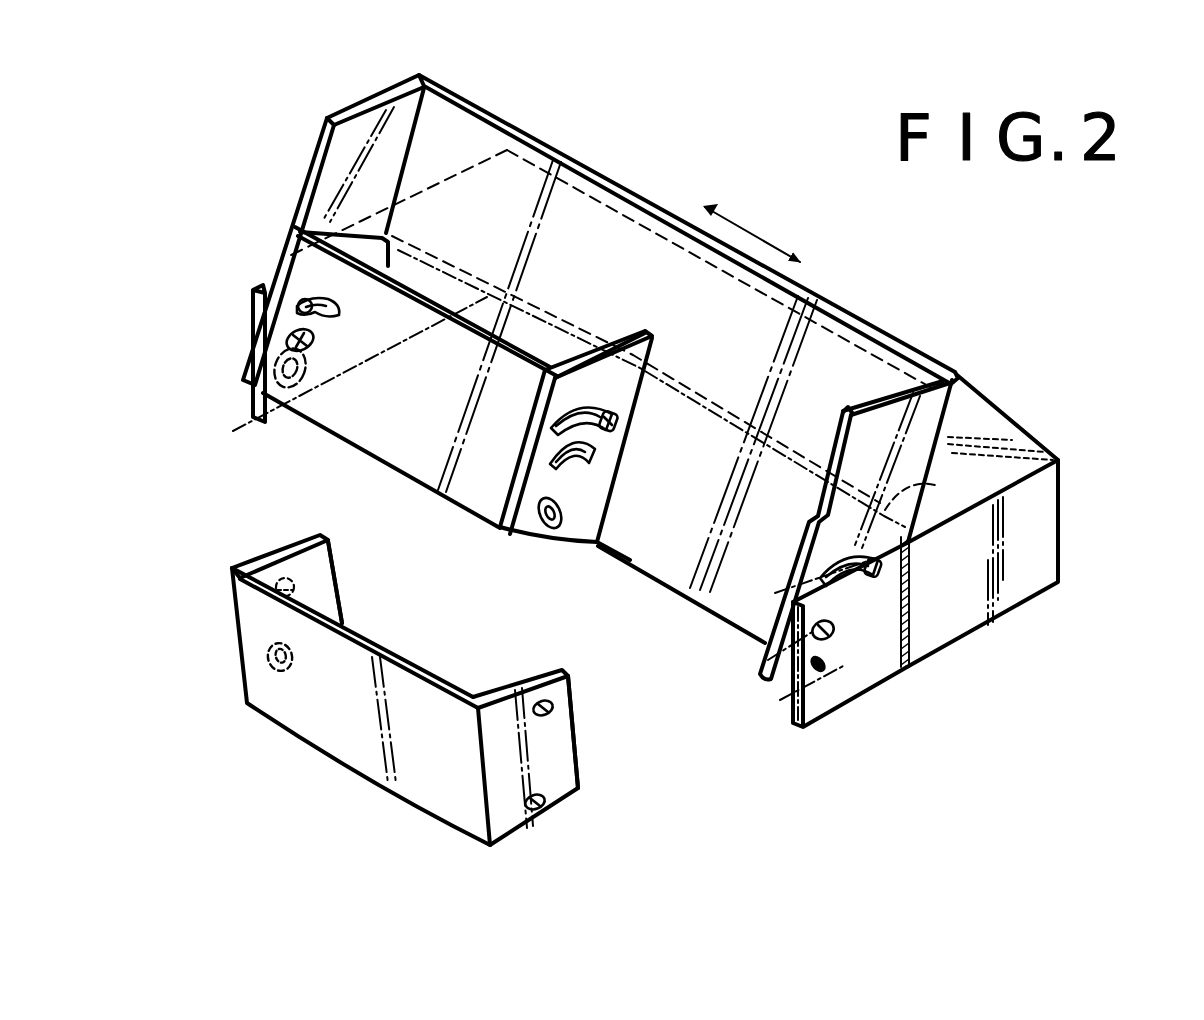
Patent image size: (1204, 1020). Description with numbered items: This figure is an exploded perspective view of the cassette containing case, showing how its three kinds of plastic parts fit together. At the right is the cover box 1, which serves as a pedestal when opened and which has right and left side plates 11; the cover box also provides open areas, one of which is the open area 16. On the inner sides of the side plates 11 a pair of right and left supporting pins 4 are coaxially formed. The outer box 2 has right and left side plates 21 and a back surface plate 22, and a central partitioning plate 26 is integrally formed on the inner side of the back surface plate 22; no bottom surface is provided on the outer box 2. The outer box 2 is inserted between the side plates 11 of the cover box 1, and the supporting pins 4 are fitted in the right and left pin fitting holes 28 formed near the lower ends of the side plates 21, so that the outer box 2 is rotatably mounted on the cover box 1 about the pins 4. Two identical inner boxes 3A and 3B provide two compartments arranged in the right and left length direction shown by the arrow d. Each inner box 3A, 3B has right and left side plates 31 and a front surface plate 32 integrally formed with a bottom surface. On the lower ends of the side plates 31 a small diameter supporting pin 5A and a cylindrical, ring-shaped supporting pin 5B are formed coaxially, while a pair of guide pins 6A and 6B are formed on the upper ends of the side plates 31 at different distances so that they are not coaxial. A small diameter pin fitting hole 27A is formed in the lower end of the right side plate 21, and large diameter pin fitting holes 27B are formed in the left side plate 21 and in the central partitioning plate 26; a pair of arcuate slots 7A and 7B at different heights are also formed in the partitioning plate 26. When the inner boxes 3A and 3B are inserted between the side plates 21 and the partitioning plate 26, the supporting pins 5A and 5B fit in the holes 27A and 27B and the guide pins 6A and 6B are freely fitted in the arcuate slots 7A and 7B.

The cover box 1 is at (1068, 522).
The right and left side plates 11 is at (1003, 597).
The outer box 2 is at (830, 288).
The right and left side plates 21 is at (335, 165).
The back surface plate 22 is at (860, 338).
The central partitioning plate 26 is at (585, 343).
The right inner box 3A is at (338, 725).
The left inner box 3B is at (398, 444).
The right and left side plates 31 is at (278, 552).
The front surface plate 32 is at (452, 487).
The supporting pins 4 is at (312, 350).
The small diameter supporting pin 5A is at (558, 517).
The cylindrical supporting pin 5B is at (252, 405).
The guide pin 6A is at (612, 423).
The guide pin 6B is at (340, 316).
The arcuate slot 7A is at (580, 410).
The arcuate slot 7B is at (593, 455).
The open area 16 is at (905, 498).
The small diameter pin fitting hole 27A is at (822, 668).
The large diameter pin fitting hole 27B is at (548, 525).
The pin fitting holes 28 is at (285, 335).
The arrow d is at (755, 235).